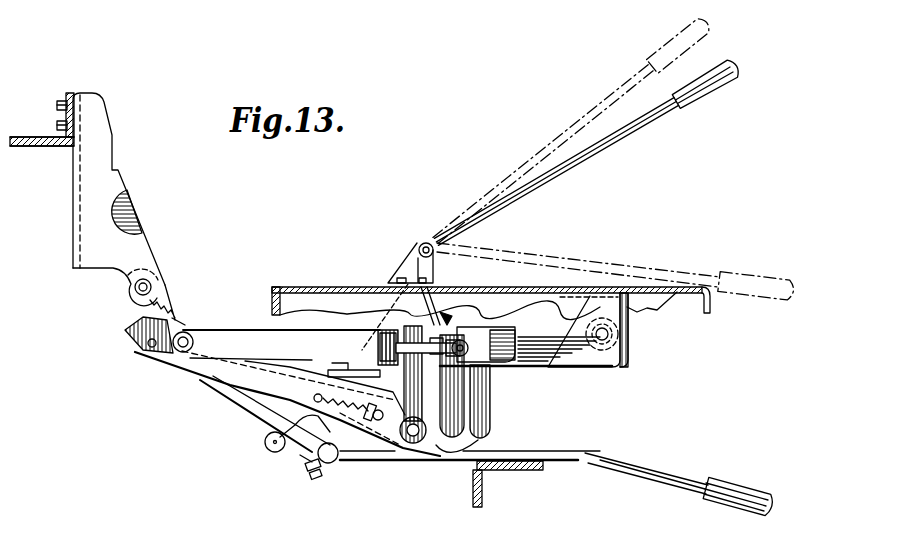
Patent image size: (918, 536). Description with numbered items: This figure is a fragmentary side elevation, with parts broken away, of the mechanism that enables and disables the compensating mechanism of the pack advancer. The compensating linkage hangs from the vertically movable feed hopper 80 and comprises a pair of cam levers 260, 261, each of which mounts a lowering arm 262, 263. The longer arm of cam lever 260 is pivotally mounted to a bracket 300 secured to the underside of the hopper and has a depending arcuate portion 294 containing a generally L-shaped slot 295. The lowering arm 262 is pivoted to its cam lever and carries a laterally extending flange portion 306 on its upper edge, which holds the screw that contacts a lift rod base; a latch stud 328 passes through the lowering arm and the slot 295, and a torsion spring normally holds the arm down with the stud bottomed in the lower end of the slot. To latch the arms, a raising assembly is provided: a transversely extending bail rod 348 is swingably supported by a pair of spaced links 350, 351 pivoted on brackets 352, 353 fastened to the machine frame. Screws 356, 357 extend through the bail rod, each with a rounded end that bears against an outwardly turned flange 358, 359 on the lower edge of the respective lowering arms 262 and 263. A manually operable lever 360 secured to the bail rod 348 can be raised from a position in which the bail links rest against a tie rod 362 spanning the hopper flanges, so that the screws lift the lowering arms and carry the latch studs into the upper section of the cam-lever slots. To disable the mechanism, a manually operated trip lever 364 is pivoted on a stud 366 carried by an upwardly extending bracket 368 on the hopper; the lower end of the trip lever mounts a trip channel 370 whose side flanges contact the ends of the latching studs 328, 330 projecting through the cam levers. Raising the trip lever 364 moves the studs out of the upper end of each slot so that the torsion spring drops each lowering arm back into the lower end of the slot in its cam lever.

The feed hopper 80 is at (300, 288).
The cam lever 260 is at (188, 323).
The cam lever 261 is at (130, 340).
The lowering arm 262 is at (246, 337).
The lowering arm 263 is at (195, 377).
The depending arcuate portion 294 is at (482, 421).
The L-shaped slot 295 is at (483, 418).
The bracket 300 is at (628, 311).
The laterally extending flange portion 306 is at (493, 321).
The stud 328 is at (472, 354).
The latching stud 330 is at (438, 460).
The bail rod 348 is at (328, 470).
The link 350 is at (164, 284).
The link 351 is at (182, 303).
The bracket 352 is at (141, 243).
The bracket 353 is at (135, 203).
The screw 356 is at (307, 468).
The screw 357 is at (327, 480).
The outwardly turned flange 358 is at (381, 466).
The outwardly turned flange 359 is at (338, 364).
The manually operable lever 360 is at (620, 460).
The tie rod 362 is at (265, 442).
The trip lever 364 is at (527, 193).
The stud 366 is at (420, 247).
The upwardly extending bracket 368 is at (407, 268).
The trip channel 370 is at (448, 332).